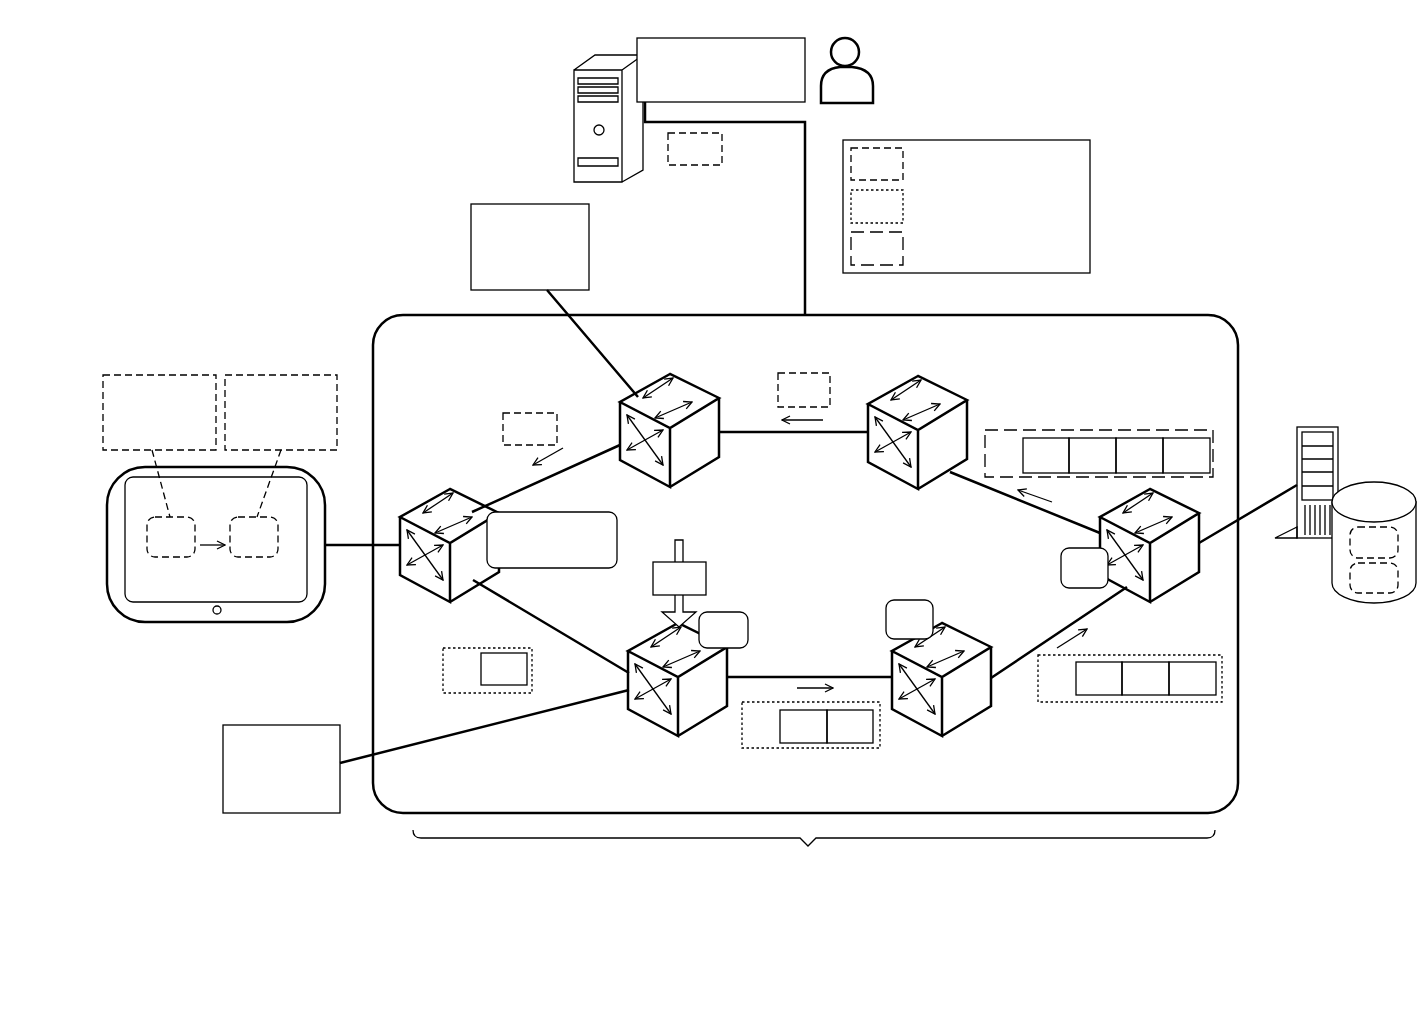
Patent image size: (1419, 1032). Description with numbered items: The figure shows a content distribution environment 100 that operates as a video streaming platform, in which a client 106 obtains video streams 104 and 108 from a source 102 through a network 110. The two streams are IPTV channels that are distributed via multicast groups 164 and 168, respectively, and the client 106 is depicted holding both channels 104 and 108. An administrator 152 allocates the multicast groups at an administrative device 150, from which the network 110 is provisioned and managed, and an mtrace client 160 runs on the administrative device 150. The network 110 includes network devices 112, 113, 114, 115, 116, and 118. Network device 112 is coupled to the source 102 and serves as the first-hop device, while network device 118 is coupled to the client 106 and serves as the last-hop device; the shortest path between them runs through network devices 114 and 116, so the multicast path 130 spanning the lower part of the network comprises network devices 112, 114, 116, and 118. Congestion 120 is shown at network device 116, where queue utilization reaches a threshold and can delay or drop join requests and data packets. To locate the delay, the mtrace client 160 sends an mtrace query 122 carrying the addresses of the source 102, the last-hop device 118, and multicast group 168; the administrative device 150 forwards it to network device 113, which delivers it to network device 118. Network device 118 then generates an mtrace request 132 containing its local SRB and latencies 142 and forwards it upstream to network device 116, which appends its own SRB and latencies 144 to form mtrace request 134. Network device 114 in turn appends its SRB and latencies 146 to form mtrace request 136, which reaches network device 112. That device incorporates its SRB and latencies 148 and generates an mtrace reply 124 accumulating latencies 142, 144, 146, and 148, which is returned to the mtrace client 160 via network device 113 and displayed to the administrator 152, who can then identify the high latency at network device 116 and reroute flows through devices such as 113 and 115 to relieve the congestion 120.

The content distribution environment 100 is at (1113, 84).
The source 102 is at (1313, 425).
The video stream 104 is at (157, 550).
The client 106 is at (207, 622).
The video stream 108 is at (240, 550).
The network 110 is at (1238, 680).
The network device 112 is at (1173, 590).
The network device 113 is at (938, 384).
The network device 114 is at (980, 710).
The network device 115 is at (643, 390).
The network device 116 is at (648, 718).
The network device 118 is at (423, 507).
The congestion 120 is at (665, 588).
The mtrace query 122 is at (681, 158).
The mtrace reply 124 is at (991, 467).
The multicast path 130 is at (814, 865).
The mtrace request 132 is at (446, 683).
The mtrace request 134 is at (748, 737).
The mtrace request 136 is at (1043, 689).
The latencies 142 is at (538, 565).
The latencies 144 is at (710, 640).
The latencies 146 is at (895, 630).
The latencies 148 is at (1071, 579).
The administrative device 150 is at (574, 106).
The administrator 152 is at (873, 82).
The mtrace client 160 is at (707, 95).
The multicast group 164 is at (144, 435).
The multicast group 168 is at (268, 435).